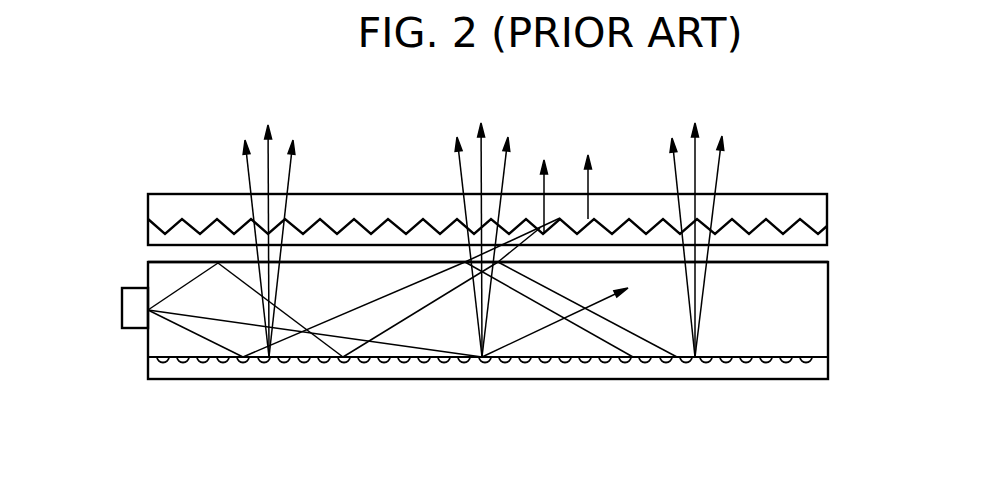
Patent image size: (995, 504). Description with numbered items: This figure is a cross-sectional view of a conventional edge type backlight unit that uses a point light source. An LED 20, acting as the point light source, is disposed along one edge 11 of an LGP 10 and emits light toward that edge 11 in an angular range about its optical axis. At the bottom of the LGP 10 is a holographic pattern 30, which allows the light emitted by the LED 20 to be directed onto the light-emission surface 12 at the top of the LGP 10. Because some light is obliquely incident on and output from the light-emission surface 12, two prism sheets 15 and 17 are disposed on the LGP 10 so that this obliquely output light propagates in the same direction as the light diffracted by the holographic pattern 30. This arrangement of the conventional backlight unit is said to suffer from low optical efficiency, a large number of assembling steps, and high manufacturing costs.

The LGP 10 is at (503, 288).
The edge 11 is at (148, 272).
The light-emission surface 12 is at (807, 258).
The prism sheet 15 is at (822, 235).
The prism sheet 17 is at (817, 202).
The LED 20 is at (122, 305).
The holographic pattern 30 is at (463, 370).